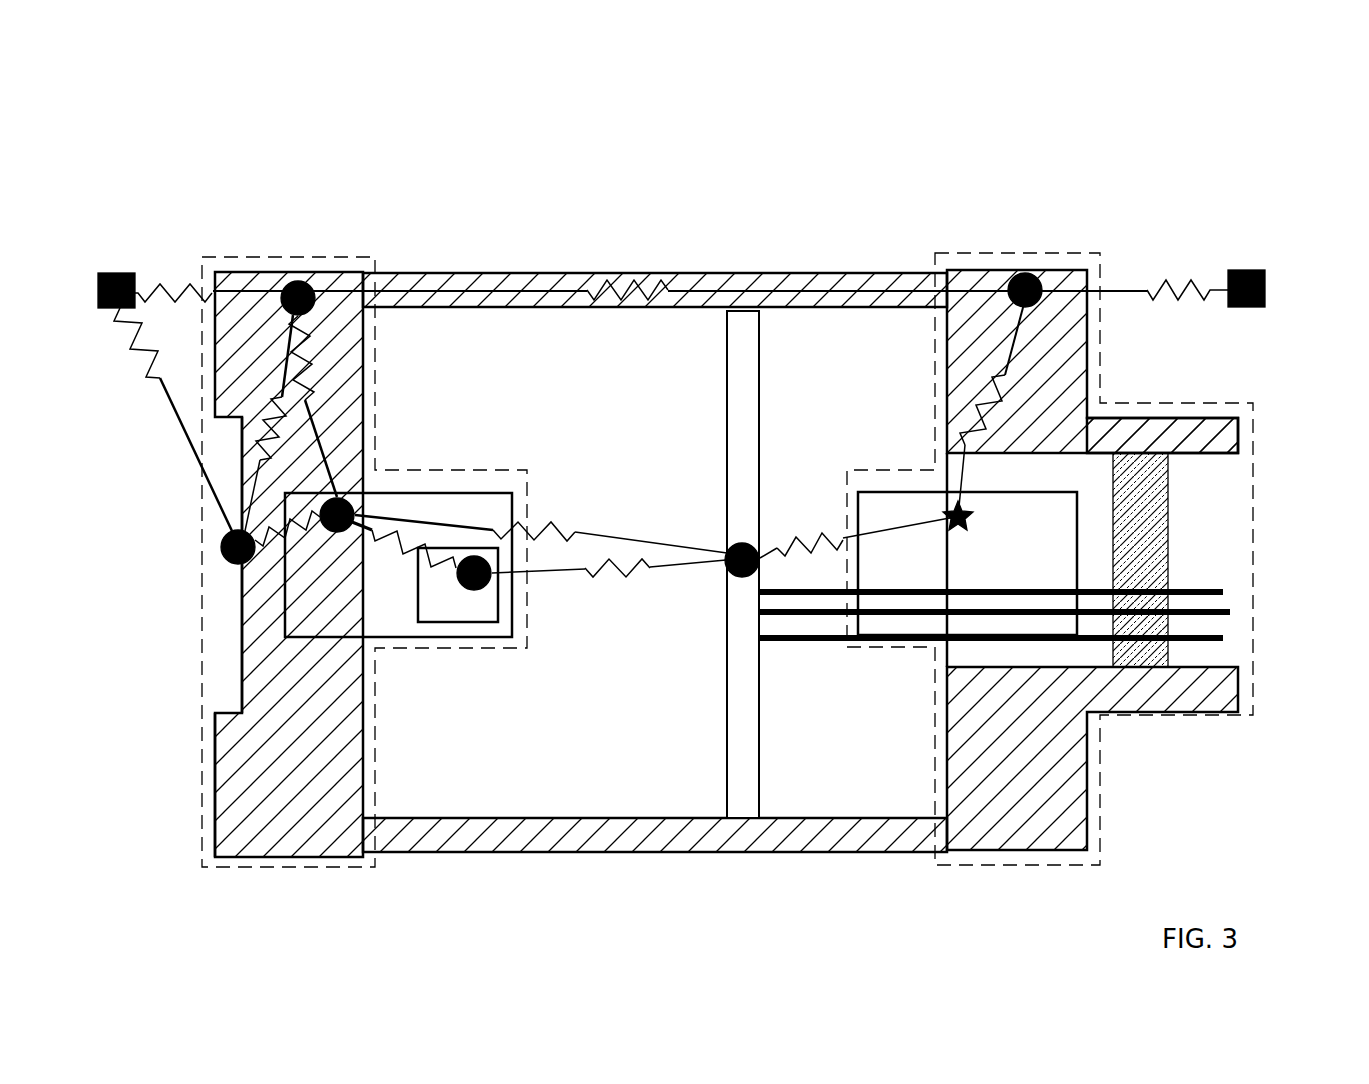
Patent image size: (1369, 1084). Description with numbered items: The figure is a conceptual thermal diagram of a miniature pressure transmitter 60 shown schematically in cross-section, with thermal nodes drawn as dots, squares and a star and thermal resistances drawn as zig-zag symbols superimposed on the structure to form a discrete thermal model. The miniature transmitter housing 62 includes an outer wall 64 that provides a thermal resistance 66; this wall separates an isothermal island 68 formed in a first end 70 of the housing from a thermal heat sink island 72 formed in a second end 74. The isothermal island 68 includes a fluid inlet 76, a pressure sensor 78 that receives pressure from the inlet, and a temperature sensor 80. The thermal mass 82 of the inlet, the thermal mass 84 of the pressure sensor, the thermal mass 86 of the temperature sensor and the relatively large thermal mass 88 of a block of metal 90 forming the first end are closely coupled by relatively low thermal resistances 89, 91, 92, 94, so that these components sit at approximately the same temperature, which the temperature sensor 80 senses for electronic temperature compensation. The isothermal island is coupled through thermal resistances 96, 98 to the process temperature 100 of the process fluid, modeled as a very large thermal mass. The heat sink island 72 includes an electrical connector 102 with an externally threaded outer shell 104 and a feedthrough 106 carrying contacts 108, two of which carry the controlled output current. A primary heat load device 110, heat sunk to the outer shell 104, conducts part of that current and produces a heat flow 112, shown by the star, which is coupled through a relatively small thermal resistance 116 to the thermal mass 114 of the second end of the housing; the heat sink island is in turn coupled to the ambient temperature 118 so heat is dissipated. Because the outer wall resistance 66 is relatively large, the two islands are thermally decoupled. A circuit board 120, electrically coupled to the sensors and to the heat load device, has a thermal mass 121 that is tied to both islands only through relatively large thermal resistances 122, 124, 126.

The miniature pressure transmitter 60 is at (1213, 130).
The miniature transmitter housing 62 is at (860, 320).
The outer wall 64 is at (460, 310).
The thermal resistance 66 is at (615, 287).
The isothermal island 68 is at (297, 868).
The first end 70 is at (187, 812).
The thermal heat sink island 72 is at (1027, 865).
The second end 74 is at (1147, 760).
The fluid inlet 76 is at (240, 673).
The pressure sensor 78 is at (318, 630).
The temperature sensor 80 is at (425, 612).
The thermal mass of the inlet 82 is at (222, 563).
The thermal mass of the pressure sensor 84 is at (350, 508).
The thermal mass of the temperature sensor 86 is at (480, 592).
The thermal mass of block of metal 88 is at (303, 285).
The thermal resistance 89 is at (400, 548).
The block of metal 90 is at (265, 818).
The thermal resistance 91 is at (312, 372).
The thermal resistance 92 is at (268, 435).
The thermal resistance 94 is at (292, 527).
The thermal resistance 96 is at (135, 350).
The thermal resistance 98 is at (157, 285).
The process temperature 100 is at (118, 273).
The electrical connector 102 is at (1272, 505).
The externally threaded outer shell 104 is at (1115, 414).
The feedthrough 106 is at (1168, 495).
The contacts 108 is at (1215, 605).
The primary heat load device 110 is at (898, 562).
The heat flow 112 is at (975, 522).
The thermal mass of the second end 114 is at (1022, 285).
The thermal resistance 116 is at (975, 415).
The ambient temperature 118 is at (1248, 270).
The circuit board 120 is at (725, 495).
The thermal mass of the circuit board 121 is at (735, 575).
The thermal resistance 122 is at (605, 578).
The thermal resistance 124 is at (563, 522).
The thermal resistance 126 is at (787, 540).